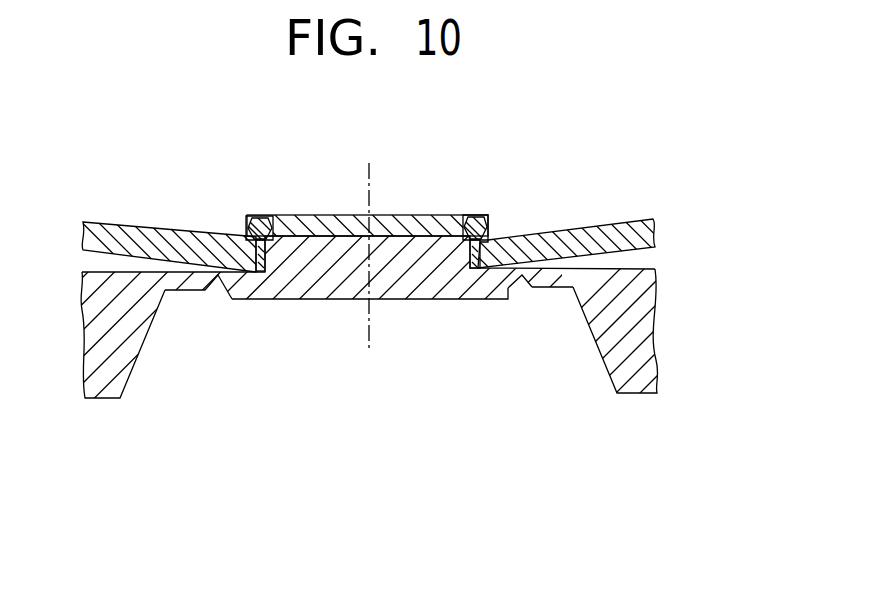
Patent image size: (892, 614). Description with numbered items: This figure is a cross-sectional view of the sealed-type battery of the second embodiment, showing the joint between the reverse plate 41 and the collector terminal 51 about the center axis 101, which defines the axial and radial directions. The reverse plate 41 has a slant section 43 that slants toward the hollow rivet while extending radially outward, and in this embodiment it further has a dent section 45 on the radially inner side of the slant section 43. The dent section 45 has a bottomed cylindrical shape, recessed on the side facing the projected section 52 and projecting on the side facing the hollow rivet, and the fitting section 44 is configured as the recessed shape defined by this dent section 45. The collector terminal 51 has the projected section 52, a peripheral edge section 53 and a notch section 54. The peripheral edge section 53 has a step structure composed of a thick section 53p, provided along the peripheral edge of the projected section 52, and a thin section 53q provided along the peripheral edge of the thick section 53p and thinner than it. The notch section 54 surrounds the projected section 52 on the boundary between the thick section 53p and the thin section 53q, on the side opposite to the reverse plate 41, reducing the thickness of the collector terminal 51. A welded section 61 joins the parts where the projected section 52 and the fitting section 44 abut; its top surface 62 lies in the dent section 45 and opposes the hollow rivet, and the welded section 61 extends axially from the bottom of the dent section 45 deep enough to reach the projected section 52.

The reverse plate 41 is at (130, 219).
The slant section 43 is at (162, 236).
The fitting section 44 is at (470, 259).
The dent section 45 is at (303, 215).
The collector terminal 51 is at (634, 397).
The projected section 52 is at (333, 252).
The peripheral edge section 53 is at (252, 286).
The thick section 53p is at (503, 289).
The thin section 53q is at (543, 279).
The notch section 54 is at (213, 284).
The welded section 61 is at (260, 215).
The top surface 62 is at (262, 213).
The center axis 101 is at (370, 183).